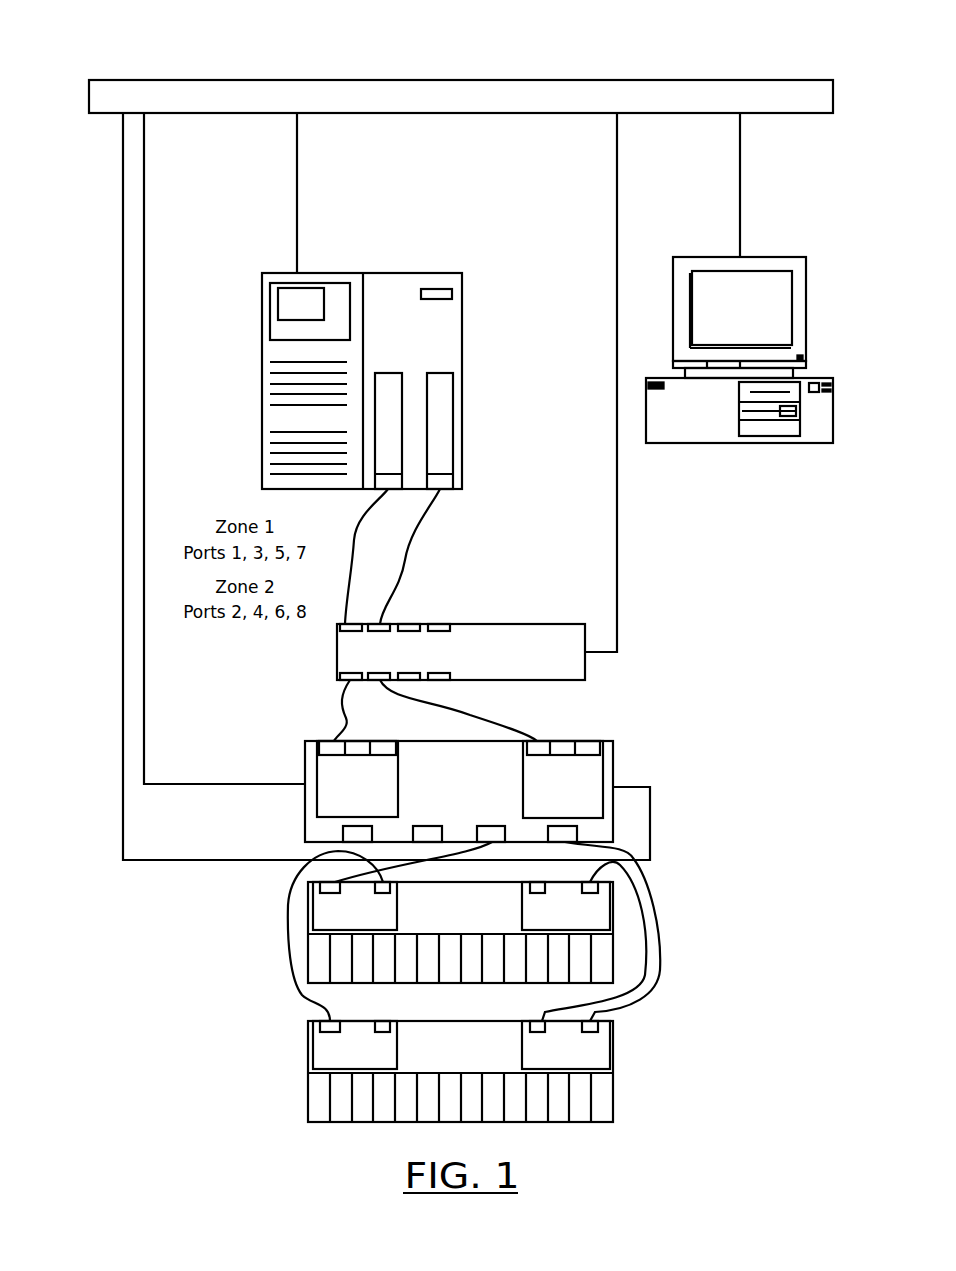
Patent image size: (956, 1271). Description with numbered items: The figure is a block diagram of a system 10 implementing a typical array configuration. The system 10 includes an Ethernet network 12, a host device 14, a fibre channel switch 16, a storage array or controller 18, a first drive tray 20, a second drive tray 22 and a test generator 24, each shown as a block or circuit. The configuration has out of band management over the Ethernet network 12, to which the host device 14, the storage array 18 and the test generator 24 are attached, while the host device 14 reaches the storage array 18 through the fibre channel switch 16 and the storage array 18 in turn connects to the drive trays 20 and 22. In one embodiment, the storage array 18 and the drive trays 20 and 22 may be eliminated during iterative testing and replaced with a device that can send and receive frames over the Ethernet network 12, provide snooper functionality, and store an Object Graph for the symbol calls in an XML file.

The system 10 is at (96, 43).
The Ethernet network 12 is at (269, 80).
The host device 14 is at (390, 271).
The fibre channel switch 16 is at (498, 624).
The storage array 18 is at (613, 761).
The drive tray 20 is at (308, 937).
The drive tray 22 is at (308, 1076).
The test generator 24 is at (780, 256).